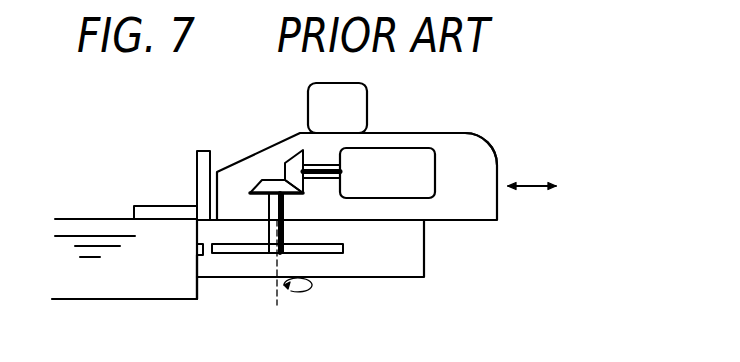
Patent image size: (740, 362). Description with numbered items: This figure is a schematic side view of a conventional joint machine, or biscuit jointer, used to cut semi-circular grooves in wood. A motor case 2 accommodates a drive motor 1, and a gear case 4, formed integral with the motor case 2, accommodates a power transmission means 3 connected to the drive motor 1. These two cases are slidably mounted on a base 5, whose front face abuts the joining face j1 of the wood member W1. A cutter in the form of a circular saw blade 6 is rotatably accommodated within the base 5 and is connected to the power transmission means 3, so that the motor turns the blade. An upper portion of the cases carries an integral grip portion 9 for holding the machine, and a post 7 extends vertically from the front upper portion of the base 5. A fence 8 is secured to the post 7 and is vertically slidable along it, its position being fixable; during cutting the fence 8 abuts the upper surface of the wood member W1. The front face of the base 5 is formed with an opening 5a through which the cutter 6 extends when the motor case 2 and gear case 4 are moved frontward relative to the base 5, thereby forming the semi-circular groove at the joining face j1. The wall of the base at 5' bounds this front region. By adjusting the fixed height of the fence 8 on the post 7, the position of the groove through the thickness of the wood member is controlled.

The drive motor 1 is at (407, 152).
The motor case 2 is at (485, 142).
The power transmission means 3 is at (268, 203).
The gear case 4 is at (262, 150).
The base 5 is at (334, 248).
The housing wall 5' is at (169, 272).
The opening 5a is at (203, 252).
The circular saw blade 6 is at (328, 256).
The post 7 is at (200, 158).
The fence 8 is at (148, 210).
The grip portion 9 is at (363, 98).
The wood member W1 is at (67, 222).
The joining face j1 is at (197, 289).